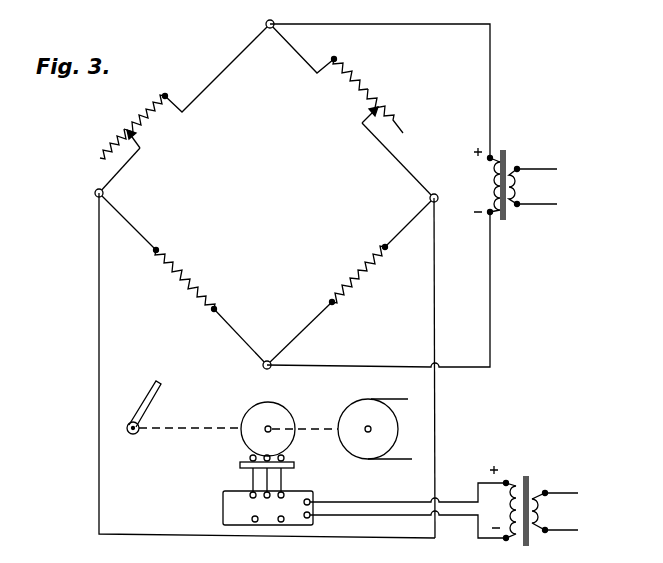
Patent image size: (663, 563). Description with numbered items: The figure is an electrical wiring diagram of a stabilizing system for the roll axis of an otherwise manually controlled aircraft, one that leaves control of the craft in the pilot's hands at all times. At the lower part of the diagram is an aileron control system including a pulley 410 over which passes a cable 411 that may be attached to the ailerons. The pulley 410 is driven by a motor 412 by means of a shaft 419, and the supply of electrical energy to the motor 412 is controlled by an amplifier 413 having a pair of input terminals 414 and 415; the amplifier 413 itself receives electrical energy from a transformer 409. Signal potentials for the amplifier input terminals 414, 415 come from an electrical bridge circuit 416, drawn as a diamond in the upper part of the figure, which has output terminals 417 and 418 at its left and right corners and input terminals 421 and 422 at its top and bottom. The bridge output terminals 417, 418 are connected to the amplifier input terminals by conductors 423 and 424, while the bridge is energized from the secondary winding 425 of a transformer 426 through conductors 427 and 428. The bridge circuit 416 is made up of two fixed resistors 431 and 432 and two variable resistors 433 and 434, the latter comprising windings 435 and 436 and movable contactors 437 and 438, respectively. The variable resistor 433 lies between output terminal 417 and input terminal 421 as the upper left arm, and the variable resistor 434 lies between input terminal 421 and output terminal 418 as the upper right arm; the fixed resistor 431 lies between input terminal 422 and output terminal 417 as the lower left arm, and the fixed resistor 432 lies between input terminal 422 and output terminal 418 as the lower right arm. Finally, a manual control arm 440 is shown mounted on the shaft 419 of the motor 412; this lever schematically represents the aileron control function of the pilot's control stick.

The transformer 409 is at (532, 538).
The pulley 410 is at (365, 451).
The cable 411 is at (395, 399).
The motor 412 is at (252, 438).
The amplifier 413 is at (224, 495).
The input terminal 414 is at (256, 524).
The input terminal 415 is at (282, 524).
The electrical bridge circuit 416 is at (283, 227).
The output terminal 417 is at (95, 193).
The output terminal 418 is at (438, 193).
The shaft 419 is at (195, 428).
The input terminal 421 is at (265, 24).
The input terminal 422 is at (270, 370).
The conductor 423 is at (99, 333).
The conductor 424 is at (435, 275).
The secondary winding 425 is at (492, 158).
The transformer 426 is at (508, 168).
The conductor 427 is at (400, 25).
The conductor 428 is at (490, 344).
The fixed resistor 431 is at (200, 290).
The fixed resistor 432 is at (361, 274).
The variable resistor 433 is at (150, 128).
The variable resistor 434 is at (352, 104).
The winding 435 is at (112, 142).
The winding 436 is at (399, 120).
The movable contactor 437 is at (130, 133).
The movable contactor 438 is at (362, 114).
The manual control arm 440 is at (153, 393).